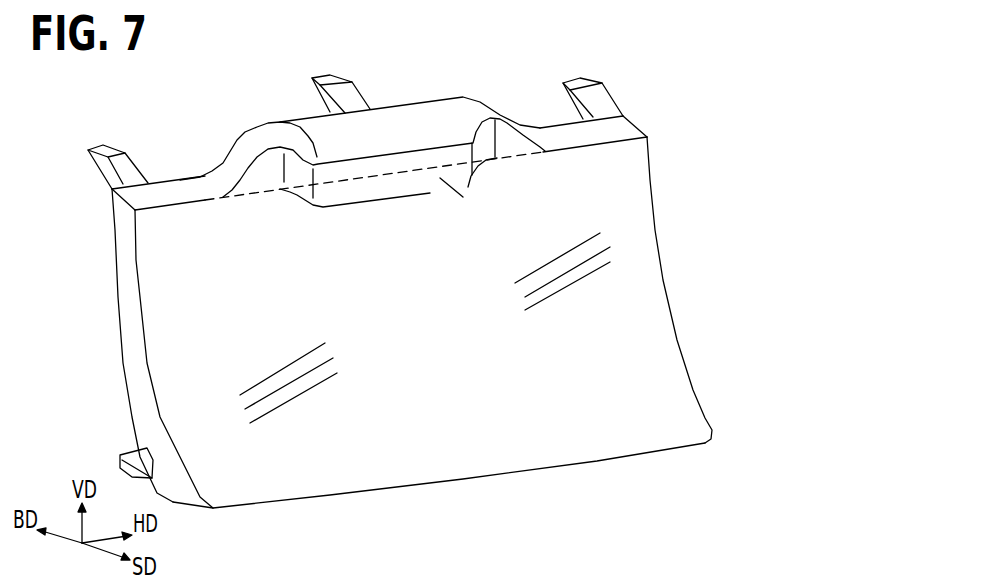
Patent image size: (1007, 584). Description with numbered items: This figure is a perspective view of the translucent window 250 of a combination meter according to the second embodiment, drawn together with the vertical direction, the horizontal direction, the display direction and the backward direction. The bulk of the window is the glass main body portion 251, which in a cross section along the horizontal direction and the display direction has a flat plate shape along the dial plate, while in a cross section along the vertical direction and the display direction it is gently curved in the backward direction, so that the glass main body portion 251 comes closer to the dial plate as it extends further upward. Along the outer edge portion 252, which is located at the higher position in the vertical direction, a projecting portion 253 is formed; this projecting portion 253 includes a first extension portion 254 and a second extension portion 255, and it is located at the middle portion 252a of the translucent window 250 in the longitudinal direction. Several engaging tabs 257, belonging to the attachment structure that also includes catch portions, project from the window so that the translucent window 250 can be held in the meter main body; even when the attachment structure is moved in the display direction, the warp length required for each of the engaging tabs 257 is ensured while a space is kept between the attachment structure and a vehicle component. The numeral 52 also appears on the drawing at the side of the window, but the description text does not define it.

The side wall portion 52 is at (137, 277).
The translucent window 250 is at (660, 266).
The glass main body portion 251 is at (170, 227).
The outer edge portion 252 is at (433, 164).
The middle portion 252a is at (405, 118).
The projecting portion 253 is at (430, 163).
The first extension portion 254 is at (590, 192).
The second extension portion 255 is at (317, 157).
The engaging tab 257 is at (100, 148).